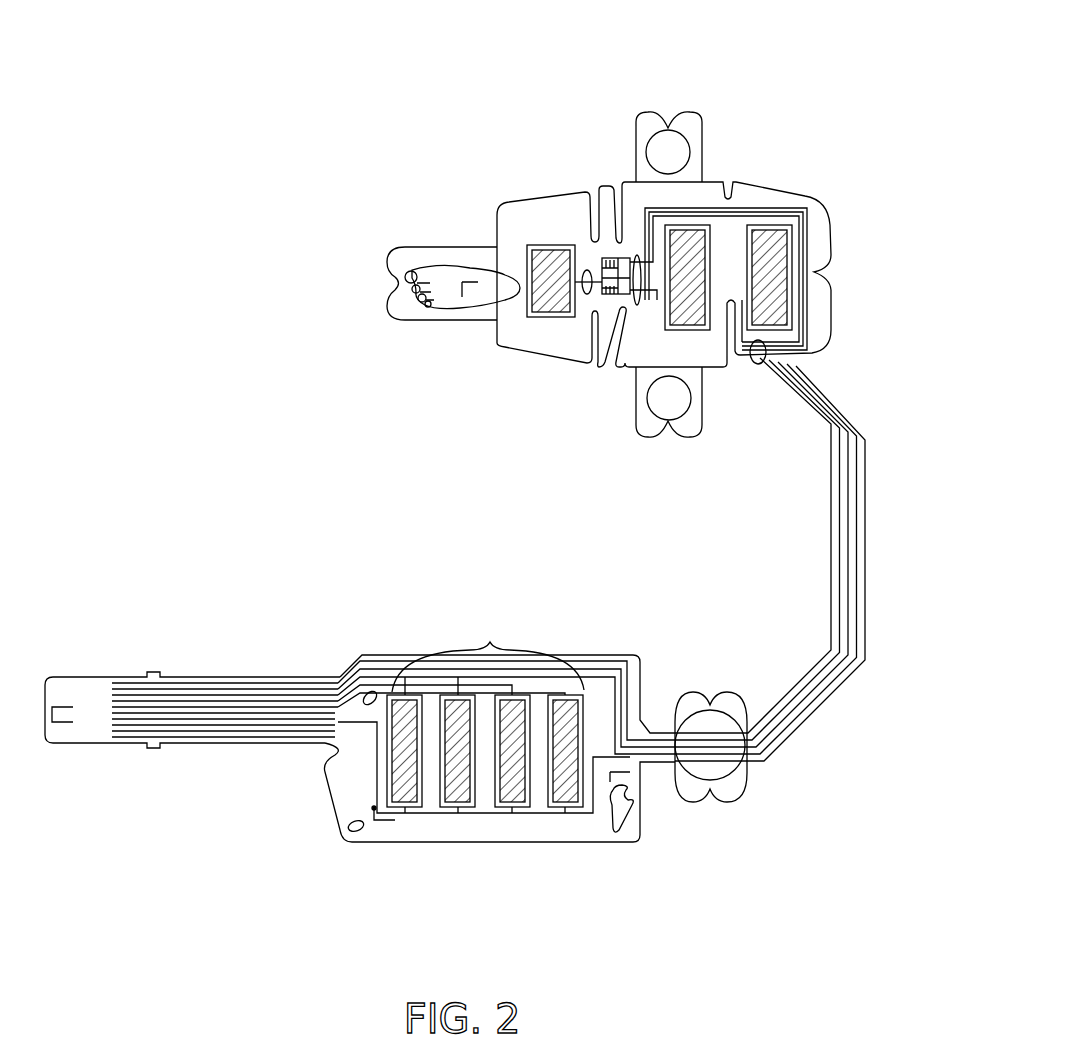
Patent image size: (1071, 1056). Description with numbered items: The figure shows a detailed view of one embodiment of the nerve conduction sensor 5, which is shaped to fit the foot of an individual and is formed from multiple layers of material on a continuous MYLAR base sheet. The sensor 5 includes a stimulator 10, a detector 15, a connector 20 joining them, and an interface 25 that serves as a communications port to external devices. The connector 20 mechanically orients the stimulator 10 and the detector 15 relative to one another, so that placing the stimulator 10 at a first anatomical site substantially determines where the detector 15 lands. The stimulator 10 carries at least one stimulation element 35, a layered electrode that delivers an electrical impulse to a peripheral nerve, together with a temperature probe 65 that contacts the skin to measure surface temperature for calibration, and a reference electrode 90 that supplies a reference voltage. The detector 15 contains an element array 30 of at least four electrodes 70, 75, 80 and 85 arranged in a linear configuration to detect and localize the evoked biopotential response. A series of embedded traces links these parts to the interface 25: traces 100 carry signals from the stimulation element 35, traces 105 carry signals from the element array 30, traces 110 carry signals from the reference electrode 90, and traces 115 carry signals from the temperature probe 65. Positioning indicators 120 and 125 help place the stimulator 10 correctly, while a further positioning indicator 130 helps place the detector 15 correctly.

The nerve conduction sensor 5 is at (268, 402).
The stimulator 10 is at (757, 161).
The detector 15 is at (363, 859).
The connector 20 is at (813, 544).
The interface 25 is at (91, 673).
The element array 30 is at (489, 642).
The stimulation element 35 is at (810, 302).
The temperature probe 65 is at (617, 262).
The electrode 70 is at (421, 813).
The electrode 75 is at (471, 813).
The electrode 80 is at (526, 813).
The electrode 85 is at (574, 813).
The reference electrode 90 is at (525, 322).
The traces 100 is at (757, 362).
The traces 105 is at (368, 694).
The traces 110 is at (586, 270).
The traces 115 is at (632, 335).
The positioning indicator 120 is at (698, 109).
The positioning indicator 125 is at (634, 433).
The positioning indicator 130 is at (688, 688).